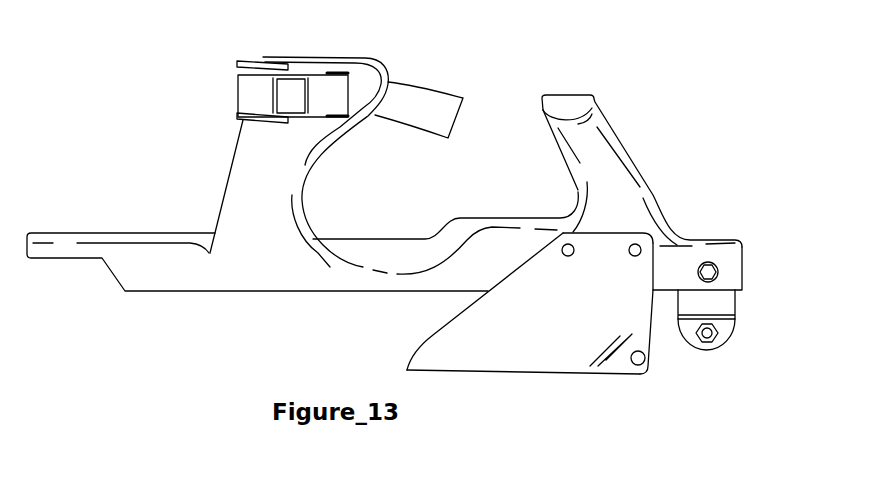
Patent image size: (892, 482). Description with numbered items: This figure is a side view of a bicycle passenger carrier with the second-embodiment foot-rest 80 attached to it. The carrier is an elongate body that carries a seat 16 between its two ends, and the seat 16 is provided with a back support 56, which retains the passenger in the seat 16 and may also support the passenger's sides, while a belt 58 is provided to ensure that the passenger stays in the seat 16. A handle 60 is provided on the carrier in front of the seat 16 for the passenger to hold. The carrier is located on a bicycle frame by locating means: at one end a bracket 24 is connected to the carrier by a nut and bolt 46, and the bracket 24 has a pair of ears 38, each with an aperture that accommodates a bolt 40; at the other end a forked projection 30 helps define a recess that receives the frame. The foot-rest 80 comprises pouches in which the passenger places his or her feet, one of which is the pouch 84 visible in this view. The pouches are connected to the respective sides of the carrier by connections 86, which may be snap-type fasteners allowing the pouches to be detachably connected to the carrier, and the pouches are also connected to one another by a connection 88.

The seat 16 is at (342, 248).
The bracket 24 is at (727, 308).
The forked projection 30 is at (47, 250).
The ears 38 is at (723, 335).
The bolt 40 is at (702, 343).
The bolt 46 is at (712, 262).
The back support 56 is at (235, 172).
The belt 58 is at (420, 105).
The handle 60 is at (573, 105).
The foot-rest 80 is at (547, 382).
The pouch 84 is at (487, 342).
The connections 86 is at (638, 245).
The connection 88 is at (645, 370).